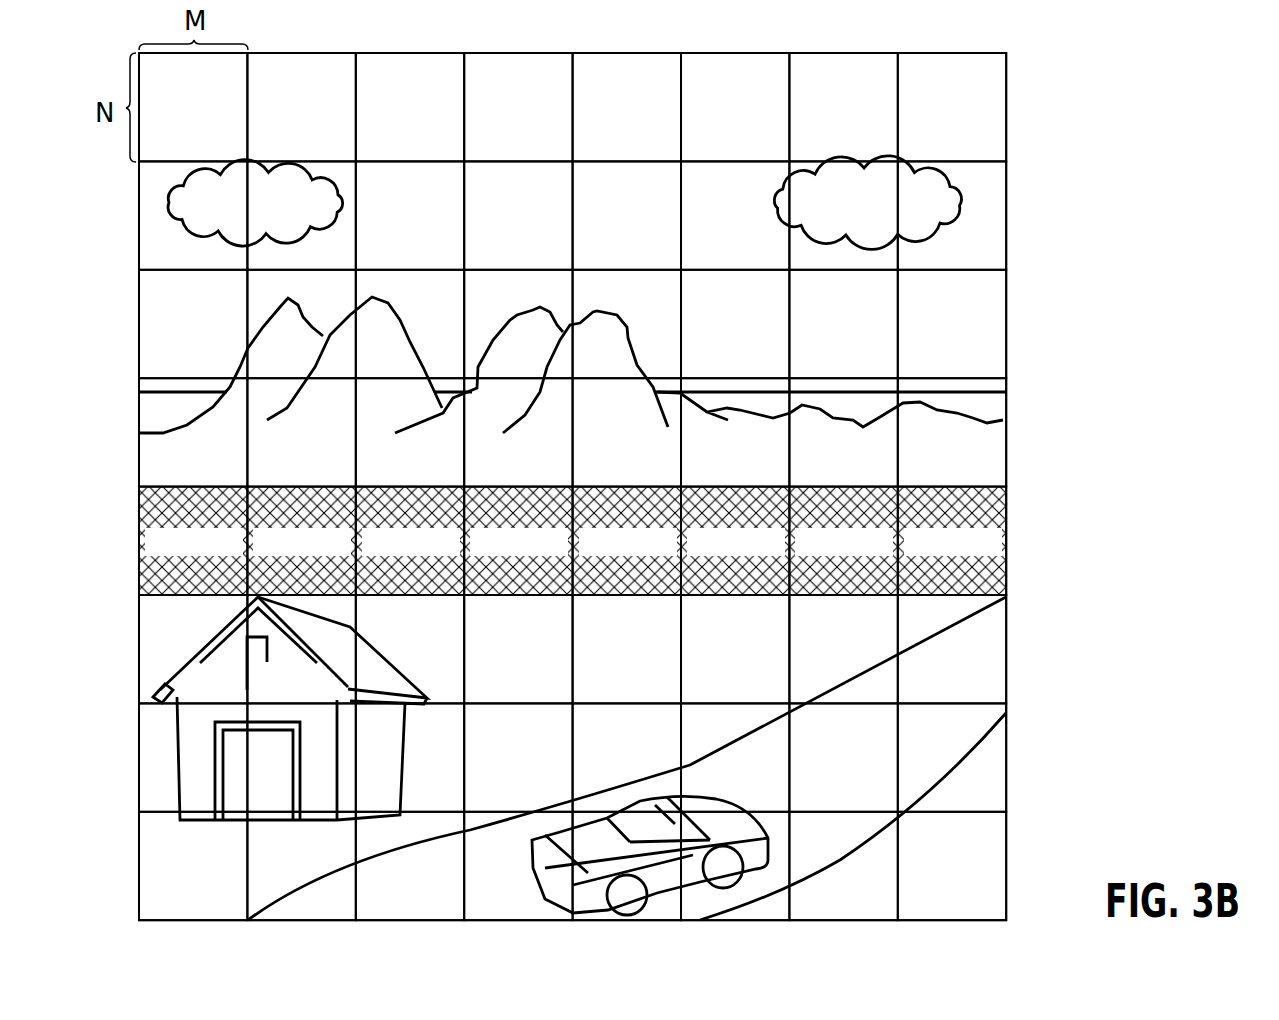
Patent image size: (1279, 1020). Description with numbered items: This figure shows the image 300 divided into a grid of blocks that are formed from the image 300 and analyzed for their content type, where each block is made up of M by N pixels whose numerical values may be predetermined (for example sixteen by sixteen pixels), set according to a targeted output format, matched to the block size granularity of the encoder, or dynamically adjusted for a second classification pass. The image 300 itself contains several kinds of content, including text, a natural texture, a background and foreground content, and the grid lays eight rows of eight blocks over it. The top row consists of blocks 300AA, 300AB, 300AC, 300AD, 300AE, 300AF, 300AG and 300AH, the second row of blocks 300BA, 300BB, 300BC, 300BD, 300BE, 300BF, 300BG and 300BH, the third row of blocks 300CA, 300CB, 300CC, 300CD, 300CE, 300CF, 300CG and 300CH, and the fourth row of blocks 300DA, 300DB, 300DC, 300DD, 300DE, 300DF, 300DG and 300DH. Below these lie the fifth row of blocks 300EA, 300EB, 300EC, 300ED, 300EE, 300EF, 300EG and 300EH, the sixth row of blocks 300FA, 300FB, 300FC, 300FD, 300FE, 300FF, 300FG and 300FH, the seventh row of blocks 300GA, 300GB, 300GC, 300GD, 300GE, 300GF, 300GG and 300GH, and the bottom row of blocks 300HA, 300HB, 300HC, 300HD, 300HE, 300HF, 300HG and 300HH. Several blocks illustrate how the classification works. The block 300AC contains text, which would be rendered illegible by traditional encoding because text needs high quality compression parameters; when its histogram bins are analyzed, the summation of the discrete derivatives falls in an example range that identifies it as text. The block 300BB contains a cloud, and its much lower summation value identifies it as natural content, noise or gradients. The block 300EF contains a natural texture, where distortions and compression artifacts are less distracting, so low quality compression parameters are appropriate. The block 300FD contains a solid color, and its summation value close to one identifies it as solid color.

The image 300 is at (1020, 121).
The block 300AA is at (240, 87).
The block 300AB is at (348, 87).
The block 300AC is at (457, 87).
The block 300AD is at (565, 87).
The block 300AE is at (674, 87).
The block 300AF is at (782, 87).
The block 300AG is at (890, 87).
The block 300AH is at (999, 87).
The block 300BA is at (240, 267).
The block 300BB is at (348, 267).
The block 300BC is at (457, 267).
The block 300BD is at (565, 267).
The block 300BE is at (674, 267).
The block 300BF is at (782, 267).
The block 300BG is at (890, 267).
The block 300BH is at (999, 267).
The block 300CA is at (240, 366).
The block 300CB is at (348, 366).
The block 300CC is at (457, 366).
The block 300CD is at (565, 366).
The block 300CE is at (674, 366).
The block 300CF is at (782, 366).
The block 300CG is at (890, 366).
The block 300CH is at (999, 366).
The block 300DA is at (240, 470).
The block 300DB is at (348, 470).
The block 300DC is at (457, 470).
The block 300DD is at (565, 470).
The block 300DE is at (674, 470).
The block 300DF is at (782, 470).
The block 300DG is at (890, 470).
The block 300DH is at (999, 470).
The block 300EA is at (240, 555).
The block 300EB is at (348, 555).
The block 300EC is at (457, 555).
The block 300ED is at (565, 555).
The block 300EE is at (674, 555).
The block 300EF is at (782, 555).
The block 300EG is at (890, 555).
The block 300EH is at (999, 555).
The block 300FA is at (240, 691).
The block 300FB is at (348, 691).
The block 300FC is at (457, 691).
The block 300FD is at (565, 691).
The block 300FE is at (674, 691).
The block 300FF is at (782, 691).
The block 300FG is at (890, 691).
The block 300FH is at (999, 691).
The block 300GA is at (240, 792).
The block 300GB is at (348, 792).
The block 300GC is at (457, 792).
The block 300GD is at (565, 792).
The block 300GE is at (674, 792).
The block 300GF is at (782, 792).
The block 300GG is at (890, 792).
The block 300GH is at (999, 792).
The block 300HA is at (240, 864).
The block 300HB is at (348, 864).
The block 300HC is at (457, 896).
The block 300HD is at (565, 896).
The block 300HE is at (627, 866).
The block 300HF is at (782, 914).
The block 300HG is at (890, 864).
The block 300HH is at (999, 864).